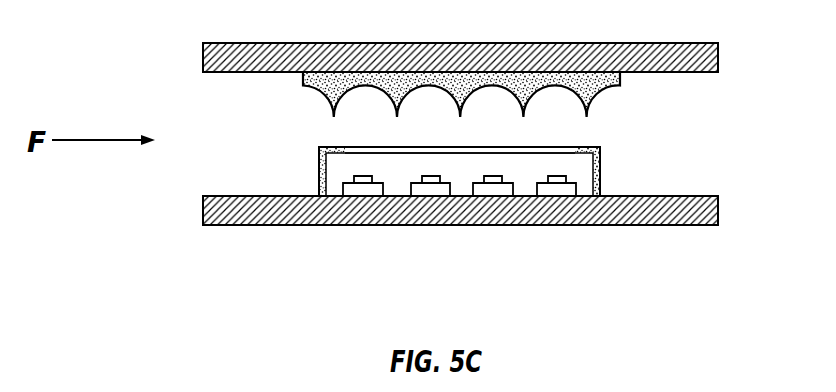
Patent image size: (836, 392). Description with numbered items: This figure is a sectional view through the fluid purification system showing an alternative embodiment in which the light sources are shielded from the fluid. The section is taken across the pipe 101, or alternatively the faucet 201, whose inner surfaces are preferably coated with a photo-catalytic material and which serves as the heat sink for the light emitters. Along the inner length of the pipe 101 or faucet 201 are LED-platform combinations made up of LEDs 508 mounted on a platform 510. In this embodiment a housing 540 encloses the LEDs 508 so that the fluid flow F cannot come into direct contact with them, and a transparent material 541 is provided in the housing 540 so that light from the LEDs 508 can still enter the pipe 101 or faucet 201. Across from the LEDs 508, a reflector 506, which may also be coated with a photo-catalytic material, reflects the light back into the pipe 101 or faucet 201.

The pipe 101 is at (679, 50).
The faucet 201 is at (460, 57).
The reflector 506 is at (557, 87).
The LED 508 is at (362, 175).
The platform 510 is at (340, 192).
The housing 540 is at (600, 170).
The transparent material 541 is at (443, 146).